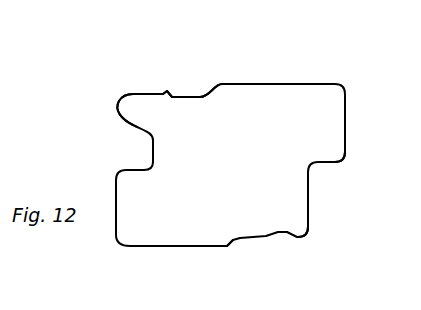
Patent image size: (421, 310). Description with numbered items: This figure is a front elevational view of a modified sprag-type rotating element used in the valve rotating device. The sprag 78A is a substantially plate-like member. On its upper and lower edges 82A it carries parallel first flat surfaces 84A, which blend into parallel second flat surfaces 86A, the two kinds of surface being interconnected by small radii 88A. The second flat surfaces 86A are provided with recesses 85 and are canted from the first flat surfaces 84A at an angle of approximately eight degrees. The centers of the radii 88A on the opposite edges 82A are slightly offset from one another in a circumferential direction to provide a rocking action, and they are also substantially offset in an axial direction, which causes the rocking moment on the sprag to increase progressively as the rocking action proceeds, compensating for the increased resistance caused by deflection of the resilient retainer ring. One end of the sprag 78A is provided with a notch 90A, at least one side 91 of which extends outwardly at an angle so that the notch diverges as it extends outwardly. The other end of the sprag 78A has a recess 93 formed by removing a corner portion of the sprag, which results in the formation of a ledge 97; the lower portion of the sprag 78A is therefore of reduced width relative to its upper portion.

The sprag 78A is at (318, 86).
The upper and lower edges 82A is at (235, 86).
The first flat surfaces 84A is at (283, 84).
The recesses 85 is at (203, 94).
The second flat surfaces 86A is at (136, 94).
The radii 88A is at (222, 86).
The notch 90A is at (150, 155).
The side 91 is at (127, 125).
The recess 93 is at (309, 198).
The ledge 97 is at (332, 166).